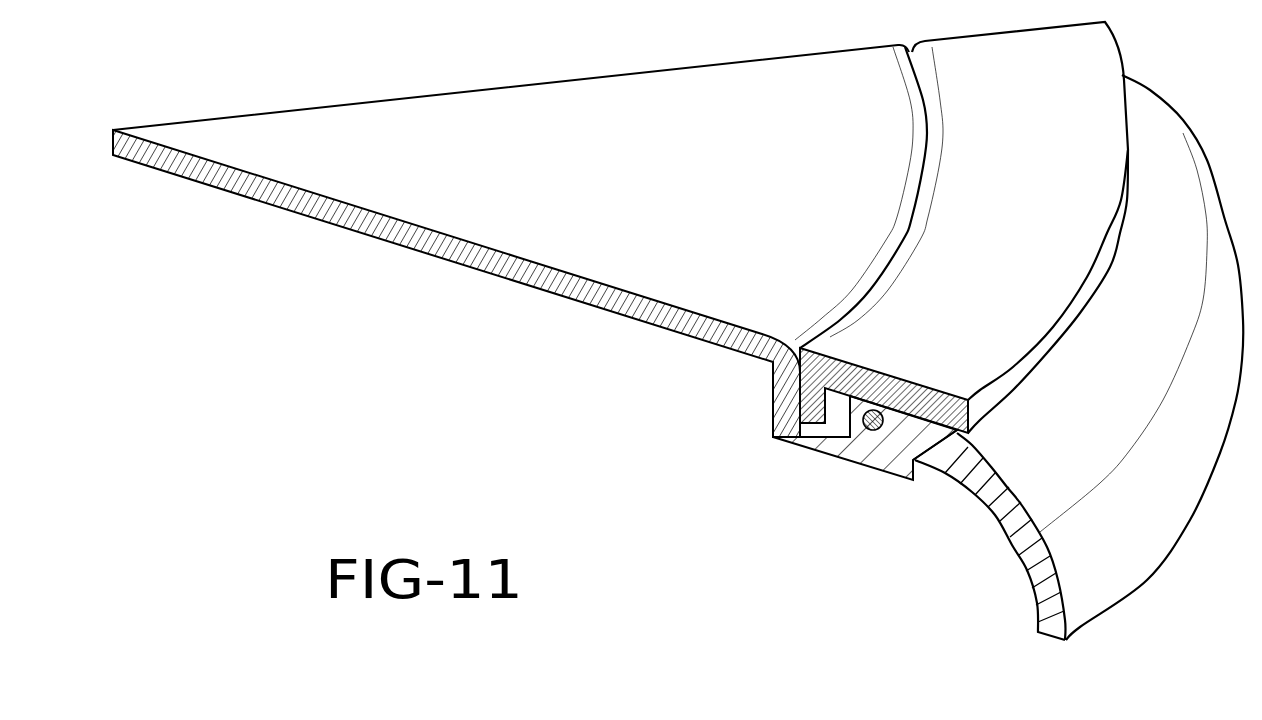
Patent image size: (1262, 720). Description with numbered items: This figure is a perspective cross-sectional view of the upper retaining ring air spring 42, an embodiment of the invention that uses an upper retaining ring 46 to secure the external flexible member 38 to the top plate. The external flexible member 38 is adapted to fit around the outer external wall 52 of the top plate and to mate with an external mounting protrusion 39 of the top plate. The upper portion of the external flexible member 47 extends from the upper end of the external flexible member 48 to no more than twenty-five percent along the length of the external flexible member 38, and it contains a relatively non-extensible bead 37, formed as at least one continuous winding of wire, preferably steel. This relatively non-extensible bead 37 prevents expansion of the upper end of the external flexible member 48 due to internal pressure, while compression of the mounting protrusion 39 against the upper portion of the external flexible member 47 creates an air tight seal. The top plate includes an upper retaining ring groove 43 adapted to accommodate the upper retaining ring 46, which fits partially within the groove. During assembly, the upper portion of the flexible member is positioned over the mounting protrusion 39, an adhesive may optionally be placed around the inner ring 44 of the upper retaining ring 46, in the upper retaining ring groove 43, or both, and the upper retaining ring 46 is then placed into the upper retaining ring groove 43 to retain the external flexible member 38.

The upper retaining ring air spring 42 is at (599, 423).
The inner ring 44 is at (778, 398).
The upper retaining ring groove 43 is at (775, 437).
The outer external wall 52 is at (841, 362).
The upper retaining ring 46 is at (1006, 381).
The upper end of the external flexible member 48 is at (823, 418).
The relatively non-extensible bead 37 is at (866, 428).
The external mounting protrusion 39 is at (878, 457).
The upper portion of the external flexible member 47 is at (898, 443).
The external flexible member 38 is at (1035, 567).